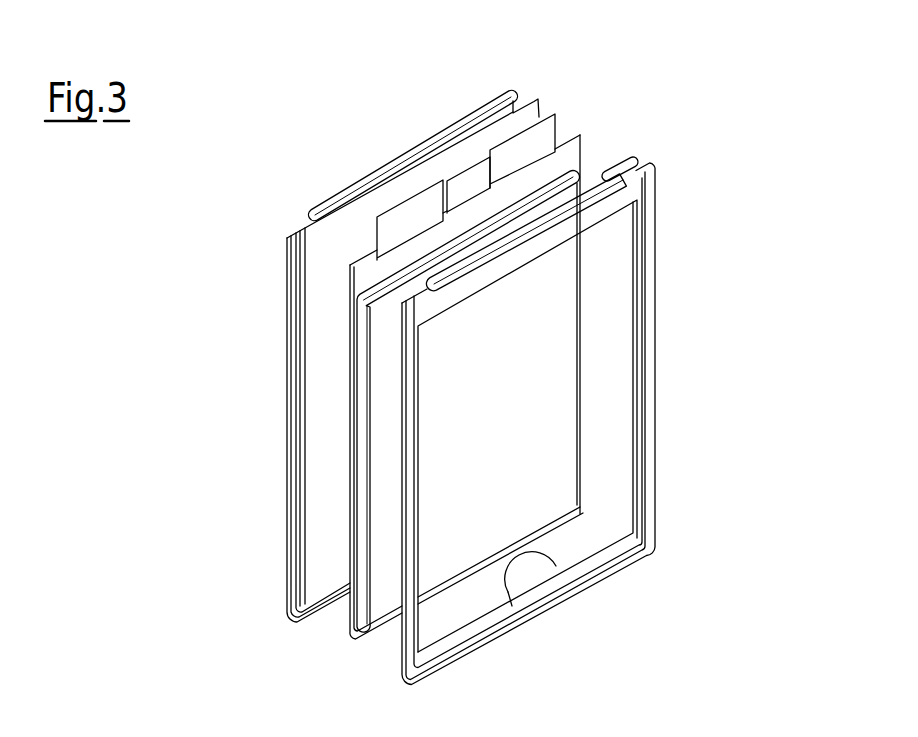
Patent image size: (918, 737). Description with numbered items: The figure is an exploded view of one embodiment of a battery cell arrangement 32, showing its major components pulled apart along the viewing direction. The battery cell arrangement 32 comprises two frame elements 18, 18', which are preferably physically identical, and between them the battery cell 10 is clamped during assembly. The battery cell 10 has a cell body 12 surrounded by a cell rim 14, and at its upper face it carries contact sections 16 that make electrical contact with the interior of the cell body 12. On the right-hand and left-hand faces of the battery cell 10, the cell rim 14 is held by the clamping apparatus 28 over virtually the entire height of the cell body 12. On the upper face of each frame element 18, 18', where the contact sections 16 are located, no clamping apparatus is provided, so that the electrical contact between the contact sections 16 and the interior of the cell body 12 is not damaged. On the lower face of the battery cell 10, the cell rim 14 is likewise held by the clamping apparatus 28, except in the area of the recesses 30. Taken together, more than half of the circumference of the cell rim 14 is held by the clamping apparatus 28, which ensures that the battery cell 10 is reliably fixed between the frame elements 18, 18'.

The battery cell 10 is at (600, 103).
The cell body 12 is at (543, 317).
The cell rim 14 is at (350, 640).
The contact sections 16 is at (513, 135).
The frame element 18 is at (587, 374).
The frame element 18' is at (359, 356).
The clamping apparatus 28 is at (295, 363).
The recesses 30 is at (552, 560).
The battery cell arrangement 32 is at (688, 158).